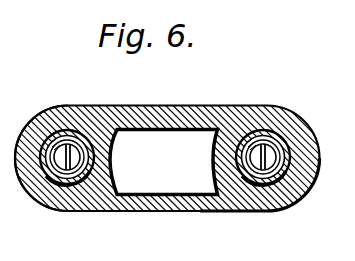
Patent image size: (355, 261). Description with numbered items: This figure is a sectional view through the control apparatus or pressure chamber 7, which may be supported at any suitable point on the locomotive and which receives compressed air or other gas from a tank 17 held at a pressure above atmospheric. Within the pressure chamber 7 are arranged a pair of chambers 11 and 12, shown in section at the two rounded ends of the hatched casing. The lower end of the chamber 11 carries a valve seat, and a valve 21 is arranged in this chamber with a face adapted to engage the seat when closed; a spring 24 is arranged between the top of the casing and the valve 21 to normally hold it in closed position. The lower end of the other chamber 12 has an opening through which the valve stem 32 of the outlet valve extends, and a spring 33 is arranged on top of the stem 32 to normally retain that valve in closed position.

The control apparatus or pressure chamber 7 is at (133, 106).
The tank 17 is at (34, 159).
The chamber 12 is at (50, 177).
The valve stem 32 is at (81, 139).
The spring 33 is at (67, 180).
The valve 21 is at (279, 139).
The chamber 11 is at (252, 180).
The spring 24 is at (271, 182).